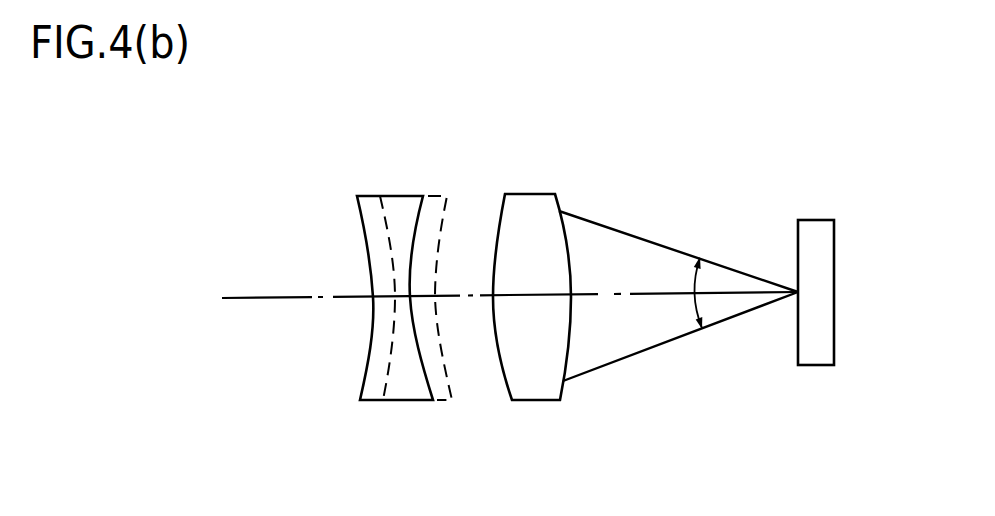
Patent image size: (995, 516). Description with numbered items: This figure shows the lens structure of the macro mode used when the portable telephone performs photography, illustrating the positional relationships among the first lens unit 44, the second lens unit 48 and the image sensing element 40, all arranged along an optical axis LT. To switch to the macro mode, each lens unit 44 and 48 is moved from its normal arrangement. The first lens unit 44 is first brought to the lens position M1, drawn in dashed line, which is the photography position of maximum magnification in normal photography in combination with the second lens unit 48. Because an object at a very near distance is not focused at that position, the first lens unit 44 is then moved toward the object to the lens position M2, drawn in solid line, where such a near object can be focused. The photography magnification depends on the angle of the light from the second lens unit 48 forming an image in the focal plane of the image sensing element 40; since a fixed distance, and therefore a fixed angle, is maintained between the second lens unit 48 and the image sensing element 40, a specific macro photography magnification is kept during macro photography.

The first lens unit 44 is at (399, 178).
The second lens unit 48 is at (532, 194).
The image sensing element 40 is at (817, 220).
The optical axis / light beam LT is at (288, 298).
The lens position M1 is at (370, 400).
The lens position M2 is at (441, 402).